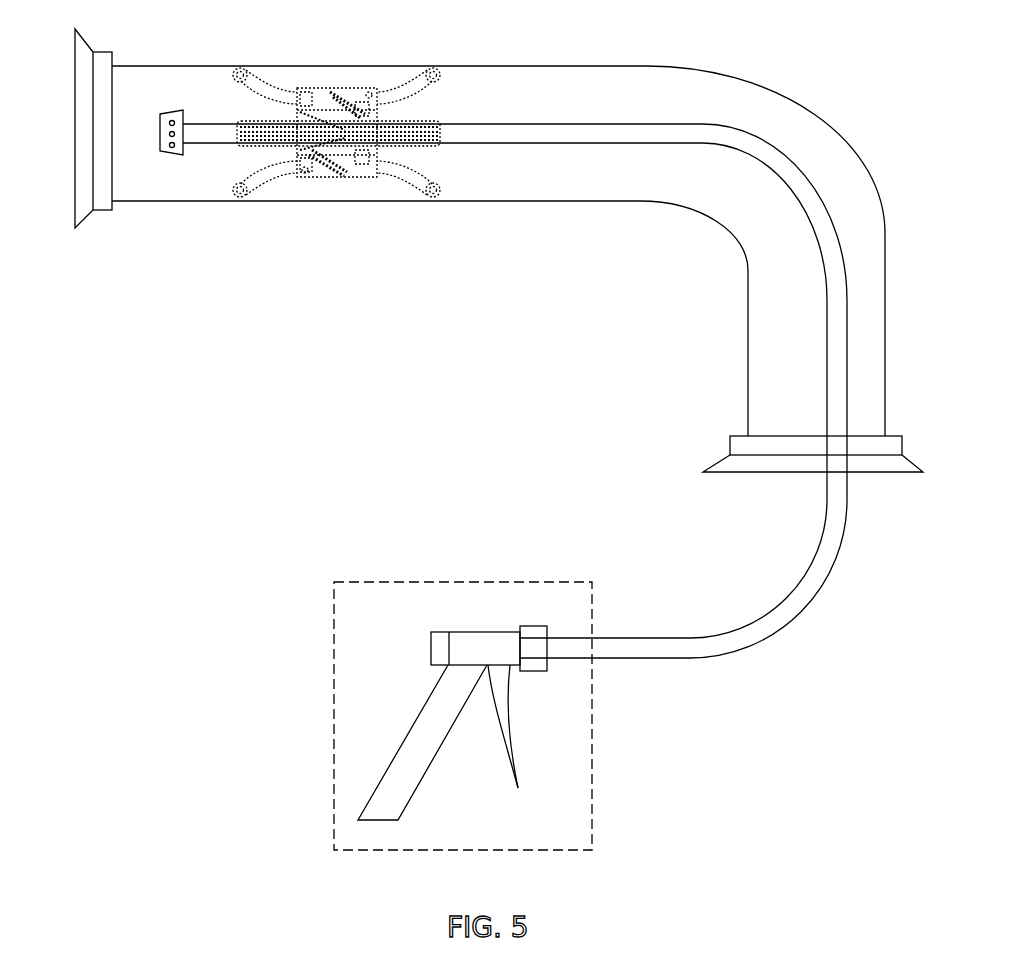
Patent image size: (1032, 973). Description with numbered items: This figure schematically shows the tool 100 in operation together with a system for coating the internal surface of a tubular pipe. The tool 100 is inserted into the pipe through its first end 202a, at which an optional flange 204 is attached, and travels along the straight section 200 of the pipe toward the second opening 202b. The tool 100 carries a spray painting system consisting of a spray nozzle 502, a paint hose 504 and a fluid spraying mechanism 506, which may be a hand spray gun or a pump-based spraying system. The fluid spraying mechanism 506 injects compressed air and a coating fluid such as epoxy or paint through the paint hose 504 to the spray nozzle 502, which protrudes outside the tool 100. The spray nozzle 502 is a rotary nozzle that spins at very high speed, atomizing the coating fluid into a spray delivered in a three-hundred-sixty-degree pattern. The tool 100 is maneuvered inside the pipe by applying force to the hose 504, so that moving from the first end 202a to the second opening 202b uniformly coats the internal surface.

The tool 100 is at (467, 100).
The straight section 200 is at (505, 66).
The first end 202a is at (813, 469).
The second opening 202b is at (67, 128).
The flange 204 is at (810, 117).
The spray nozzle 502 is at (173, 108).
The paint hose 504 is at (765, 607).
The fluid spraying mechanism 506 is at (493, 582).